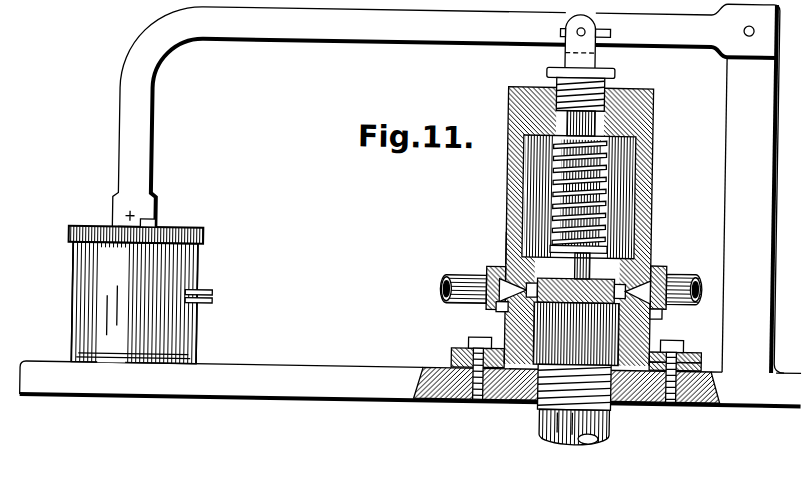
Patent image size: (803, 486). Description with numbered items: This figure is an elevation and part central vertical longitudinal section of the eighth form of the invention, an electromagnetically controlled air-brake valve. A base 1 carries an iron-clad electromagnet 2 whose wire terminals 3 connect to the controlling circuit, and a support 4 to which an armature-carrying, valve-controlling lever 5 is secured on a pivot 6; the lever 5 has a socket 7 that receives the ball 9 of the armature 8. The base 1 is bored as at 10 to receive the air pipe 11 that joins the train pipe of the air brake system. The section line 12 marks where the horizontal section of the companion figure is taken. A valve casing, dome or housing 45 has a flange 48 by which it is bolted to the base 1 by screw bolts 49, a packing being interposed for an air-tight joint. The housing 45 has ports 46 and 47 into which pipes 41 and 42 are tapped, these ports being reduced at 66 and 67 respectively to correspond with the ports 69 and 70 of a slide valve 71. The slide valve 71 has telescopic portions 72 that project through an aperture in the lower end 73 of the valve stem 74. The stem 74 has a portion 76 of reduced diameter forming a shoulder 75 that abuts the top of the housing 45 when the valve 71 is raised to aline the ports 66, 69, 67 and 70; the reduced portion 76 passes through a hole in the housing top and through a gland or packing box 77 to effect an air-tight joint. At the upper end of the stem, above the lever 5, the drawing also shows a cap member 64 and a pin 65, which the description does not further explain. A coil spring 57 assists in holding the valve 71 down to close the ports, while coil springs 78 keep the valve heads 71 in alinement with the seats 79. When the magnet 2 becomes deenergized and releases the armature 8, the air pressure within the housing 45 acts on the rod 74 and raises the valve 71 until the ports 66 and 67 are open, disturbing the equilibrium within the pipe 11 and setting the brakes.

The base 1 is at (244, 376).
The electromagnet 2 is at (134, 303).
The wire terminals 3 is at (204, 298).
The support 4 is at (756, 188).
The valve controlling lever 5 is at (444, 118).
The pivot 6 is at (740, 25).
The socket 7 is at (134, 209).
The armature 8 is at (192, 236).
The ball 9 is at (152, 227).
The bore 10 is at (545, 440).
The air pipe 11 is at (568, 438).
The section line 12— 12 is at (467, 258).
The pipe 41 is at (690, 280).
The pipe 42 is at (442, 282).
The valve housing 45 is at (506, 158).
The port 46 is at (656, 268).
The port 47 is at (524, 270).
The flange 48 is at (703, 361).
The screw bolts 49 is at (690, 348).
The coil spring 57 is at (552, 182).
The cap 64 is at (557, 30).
The pin 65 is at (608, 30).
The reduced port 66 is at (636, 310).
The reduced port 67 is at (503, 302).
The port 69 is at (620, 366).
The port 70 is at (533, 382).
The slide valve 71 is at (507, 235).
The telescopic portions 72 is at (548, 420).
The lower end of valve stem 73 is at (590, 258).
The valve stem 74 is at (607, 200).
The shoulder 75 is at (510, 120).
The reduced portion of stem 76 is at (613, 100).
The gland 77 is at (547, 88).
The coil springs 78 is at (612, 410).
The seats 79 is at (470, 342).